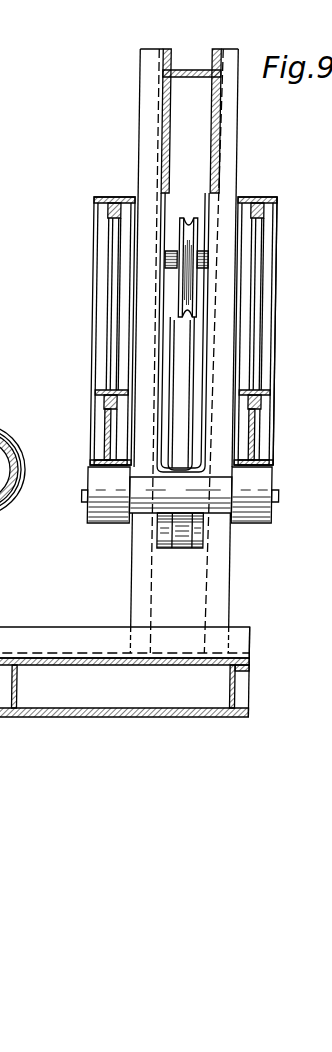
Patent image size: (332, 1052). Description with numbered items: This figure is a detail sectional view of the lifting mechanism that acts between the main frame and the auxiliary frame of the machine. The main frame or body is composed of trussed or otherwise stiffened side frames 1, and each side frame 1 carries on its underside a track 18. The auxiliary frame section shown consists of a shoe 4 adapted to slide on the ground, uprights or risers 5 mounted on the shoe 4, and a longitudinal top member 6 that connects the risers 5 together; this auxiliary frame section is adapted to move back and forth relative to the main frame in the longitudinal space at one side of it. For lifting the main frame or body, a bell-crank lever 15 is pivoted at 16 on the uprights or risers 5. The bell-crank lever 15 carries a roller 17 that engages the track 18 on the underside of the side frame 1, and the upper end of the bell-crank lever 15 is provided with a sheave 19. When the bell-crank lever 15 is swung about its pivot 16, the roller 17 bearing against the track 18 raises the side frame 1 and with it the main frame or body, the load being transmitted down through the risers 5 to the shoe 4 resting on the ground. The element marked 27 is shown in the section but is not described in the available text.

The side frame 1 is at (274, 221).
The shoe 4 is at (257, 655).
The uprights or risers 5 is at (228, 566).
The longitudinal top member 6 is at (175, 68).
The bell-crank lever 15 is at (202, 355).
The pivot 16 is at (152, 532).
The roller 17 is at (278, 482).
The track 18 is at (94, 467).
The sheave 19 is at (196, 240).
The guide box 27 is at (107, 197).